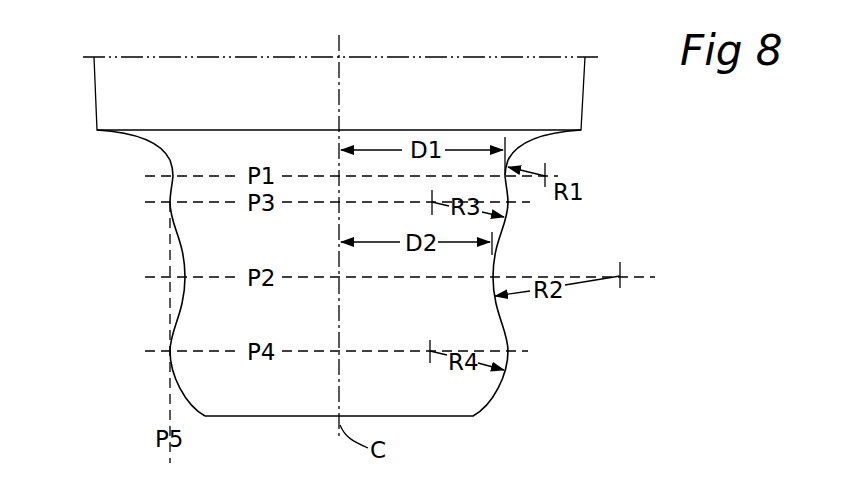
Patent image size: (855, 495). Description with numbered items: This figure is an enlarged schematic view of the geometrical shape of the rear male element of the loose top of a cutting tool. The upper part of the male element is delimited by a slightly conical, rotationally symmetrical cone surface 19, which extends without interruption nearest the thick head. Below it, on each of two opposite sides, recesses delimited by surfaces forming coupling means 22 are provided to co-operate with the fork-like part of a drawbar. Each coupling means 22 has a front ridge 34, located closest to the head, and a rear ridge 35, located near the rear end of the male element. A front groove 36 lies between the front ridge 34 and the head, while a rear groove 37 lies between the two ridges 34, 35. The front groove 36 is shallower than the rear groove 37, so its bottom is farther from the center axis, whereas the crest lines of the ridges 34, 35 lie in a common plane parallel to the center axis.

The cone surface 19 is at (585, 90).
The coupling means 22 is at (327, 273).
The front ridge 34 is at (170, 202).
The rear ridge 35 is at (170, 352).
The front groove 36 is at (172, 178).
The rear groove 37 is at (185, 277).